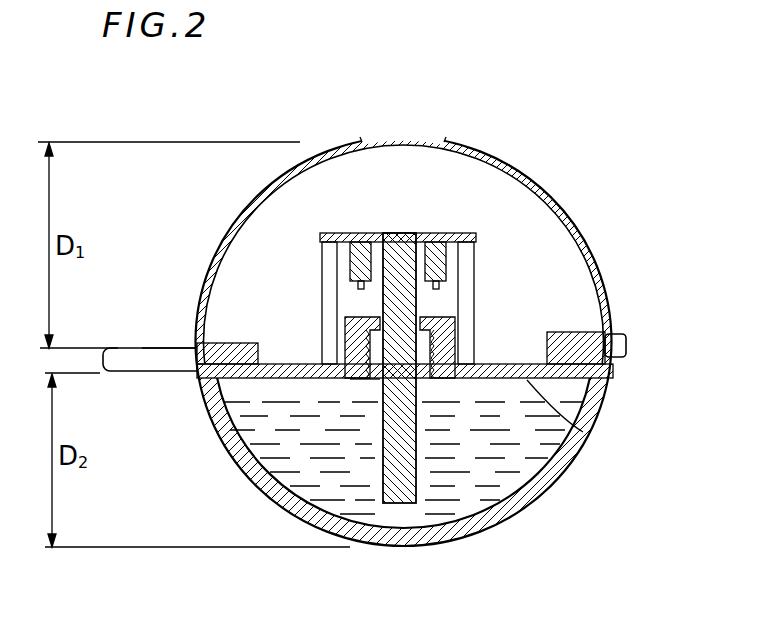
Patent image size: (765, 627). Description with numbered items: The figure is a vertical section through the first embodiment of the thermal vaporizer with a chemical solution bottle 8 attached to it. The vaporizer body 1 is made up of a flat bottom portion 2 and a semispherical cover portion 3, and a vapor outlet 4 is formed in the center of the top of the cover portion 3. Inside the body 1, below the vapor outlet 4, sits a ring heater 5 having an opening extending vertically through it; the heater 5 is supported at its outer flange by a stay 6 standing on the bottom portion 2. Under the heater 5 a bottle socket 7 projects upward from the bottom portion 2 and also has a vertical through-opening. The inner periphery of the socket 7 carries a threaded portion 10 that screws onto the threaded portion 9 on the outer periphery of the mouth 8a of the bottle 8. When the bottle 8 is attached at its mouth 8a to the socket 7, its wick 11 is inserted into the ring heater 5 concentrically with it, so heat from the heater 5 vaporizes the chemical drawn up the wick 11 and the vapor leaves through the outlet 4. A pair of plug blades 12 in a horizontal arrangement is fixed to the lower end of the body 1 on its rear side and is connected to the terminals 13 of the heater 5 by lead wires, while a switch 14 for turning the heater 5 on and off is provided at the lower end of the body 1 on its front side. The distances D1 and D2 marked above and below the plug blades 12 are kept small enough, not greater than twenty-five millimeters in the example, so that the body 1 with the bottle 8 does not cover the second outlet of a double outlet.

The vaporizer body 1 is at (205, 257).
The flat bottom portion 2 is at (588, 435).
The semispherical cover portion 3 is at (282, 178).
The vapor outlet 4 is at (379, 139).
The ring heater 5 is at (433, 234).
The stay 6 is at (482, 243).
The bottle socket 7 is at (462, 316).
The chemical solution bottle 8 is at (543, 480).
The mouth of chemical solution bottle 8a is at (370, 386).
The threaded portion 9 is at (252, 386).
The threaded portion 10 is at (348, 322).
The wick 11 is at (416, 470).
The plug blades 12 is at (131, 360).
The terminals 13 is at (357, 290).
The switch 14 is at (617, 334).